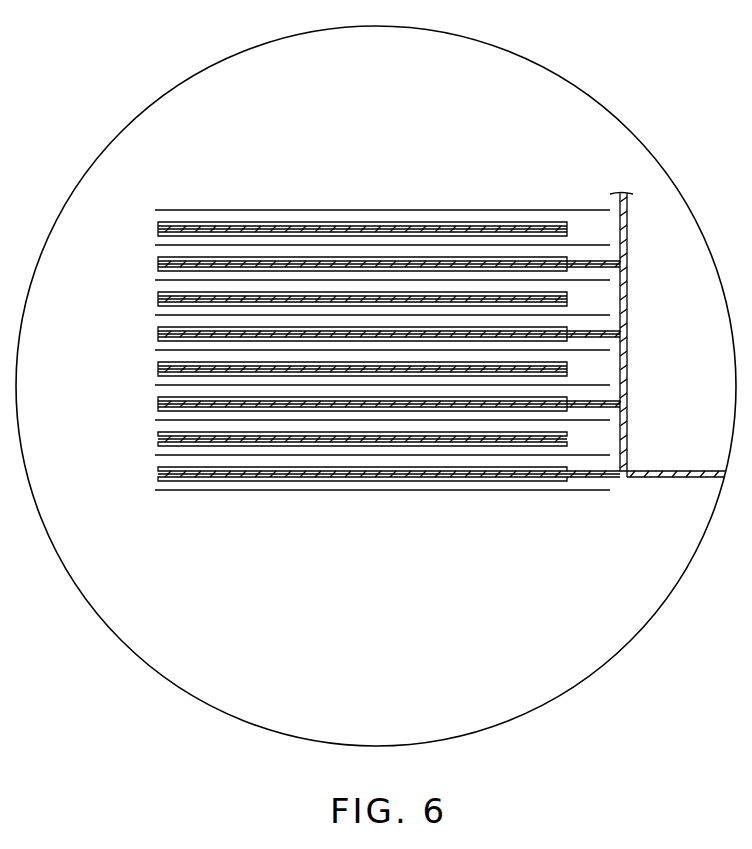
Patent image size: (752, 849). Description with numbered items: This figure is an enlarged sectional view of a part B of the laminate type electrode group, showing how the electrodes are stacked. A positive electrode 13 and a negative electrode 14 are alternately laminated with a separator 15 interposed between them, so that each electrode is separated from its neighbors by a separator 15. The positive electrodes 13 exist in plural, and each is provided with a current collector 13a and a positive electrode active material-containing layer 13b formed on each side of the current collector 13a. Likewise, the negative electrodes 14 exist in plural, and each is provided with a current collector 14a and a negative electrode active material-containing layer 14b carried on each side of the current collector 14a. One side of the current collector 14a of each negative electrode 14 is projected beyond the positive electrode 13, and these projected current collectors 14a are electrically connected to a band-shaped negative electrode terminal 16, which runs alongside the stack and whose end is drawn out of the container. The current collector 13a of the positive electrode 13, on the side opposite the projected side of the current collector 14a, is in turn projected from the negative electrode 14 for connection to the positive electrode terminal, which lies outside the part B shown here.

The positive electrode 13 is at (297, 357).
The current collector 13a is at (160, 439).
The positive electrode active material-containing layer 13b is at (158, 432).
The negative electrode 14 is at (368, 406).
The current collector 14a is at (598, 261).
The negative electrode active material-containing layer 14b is at (162, 469).
The separator 15 is at (441, 210).
The band-shaped negative electrode terminal 16 is at (669, 478).
The part B is at (625, 649).